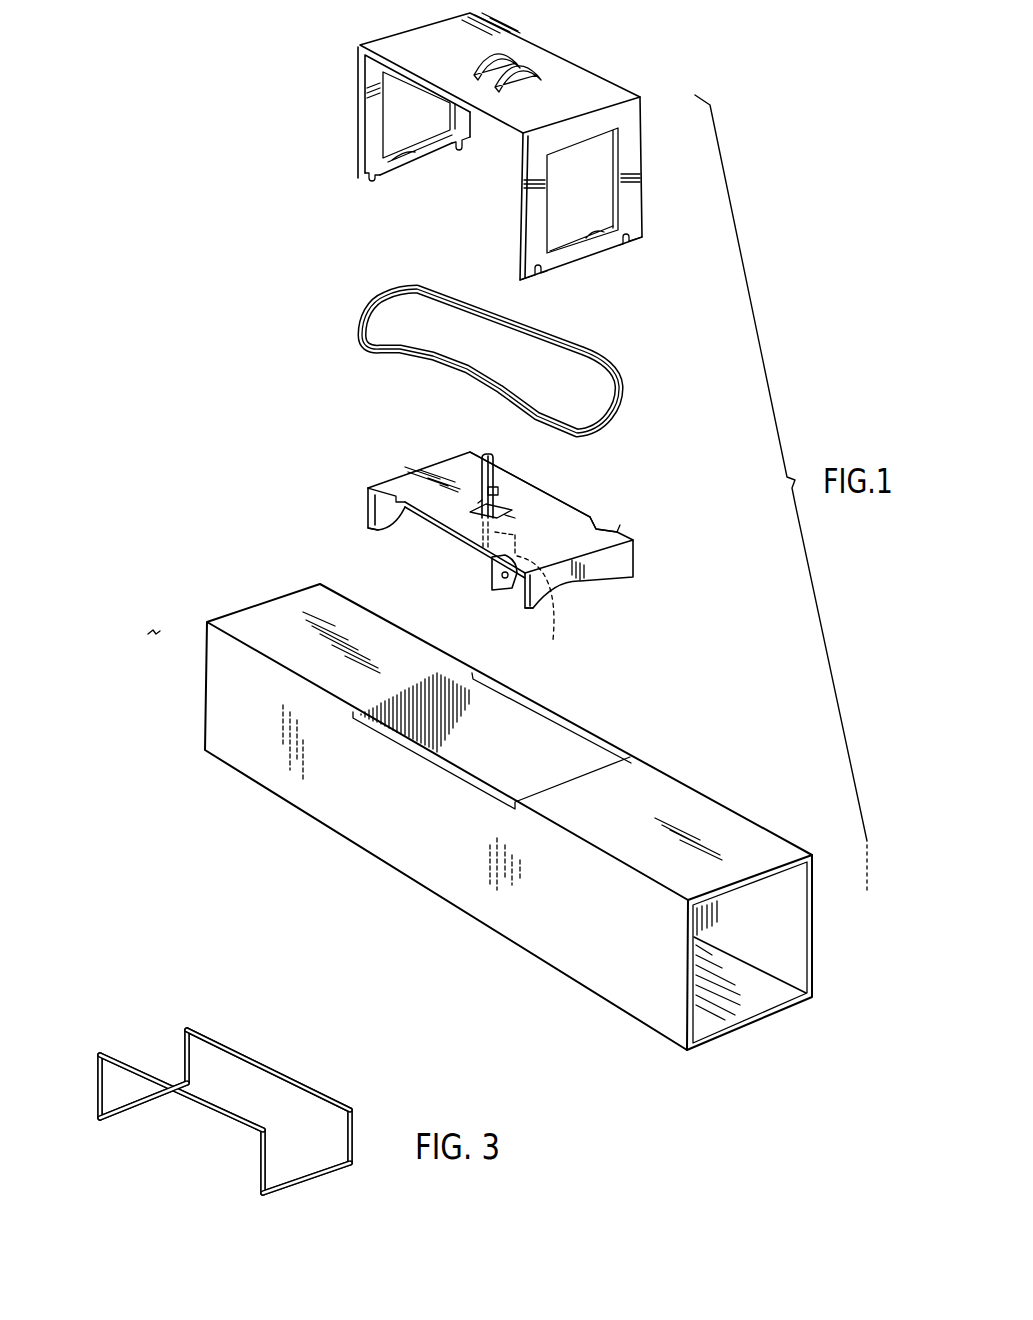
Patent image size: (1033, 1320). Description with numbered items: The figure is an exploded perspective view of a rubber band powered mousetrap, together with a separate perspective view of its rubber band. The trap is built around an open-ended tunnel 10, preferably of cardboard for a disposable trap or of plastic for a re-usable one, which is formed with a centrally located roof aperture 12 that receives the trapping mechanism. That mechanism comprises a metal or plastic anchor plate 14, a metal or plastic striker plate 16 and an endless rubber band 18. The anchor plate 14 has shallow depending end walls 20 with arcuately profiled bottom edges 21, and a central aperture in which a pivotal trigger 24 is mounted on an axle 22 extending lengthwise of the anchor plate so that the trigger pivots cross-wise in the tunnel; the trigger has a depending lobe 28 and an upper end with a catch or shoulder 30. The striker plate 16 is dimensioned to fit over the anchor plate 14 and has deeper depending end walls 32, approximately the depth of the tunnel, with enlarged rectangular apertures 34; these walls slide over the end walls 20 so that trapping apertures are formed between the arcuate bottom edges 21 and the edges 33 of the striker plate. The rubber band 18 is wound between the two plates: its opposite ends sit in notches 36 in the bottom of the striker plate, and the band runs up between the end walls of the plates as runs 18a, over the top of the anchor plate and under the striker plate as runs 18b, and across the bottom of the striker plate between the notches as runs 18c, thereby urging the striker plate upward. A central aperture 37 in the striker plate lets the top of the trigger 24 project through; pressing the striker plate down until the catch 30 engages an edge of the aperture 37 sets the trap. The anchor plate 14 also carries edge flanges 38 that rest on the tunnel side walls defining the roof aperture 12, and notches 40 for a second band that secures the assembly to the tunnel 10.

In FIG. 1, the open-ended tunnel 10 is at (380, 843).
In FIG. 1, the roof aperture 12 is at (557, 757).
In FIG. 1, the anchor plate 14 is at (543, 507).
In FIG. 1, the striker plate 16 is at (572, 82).
In FIG. 1, the endless rubber band 18 is at (375, 320).
In FIG. 3, the endless rubber band 18 is at (245, 1044).
In FIG. 3, the runs of the band 18a is at (182, 1050).
In FIG. 3, the runs of the band 18b is at (297, 1070).
In FIG. 3, the runs of the band 18c is at (147, 1103).
In FIG. 1, the depending end walls 20 is at (382, 517).
In FIG. 1, the arcuately profiled bottom edges 21 is at (397, 517).
In FIG. 1, the axle 22 is at (473, 500).
In FIG. 1, the pivotal trigger 24 is at (492, 566).
In FIG. 1, the depending lobe 28 is at (500, 580).
In FIG. 1, the catch 30 is at (500, 482).
In FIG. 1, the depending end walls 32 is at (365, 83).
In FIG. 1, the edges 33 is at (415, 150).
In FIG. 1, the enlarged rectangular apertures 34 is at (392, 107).
In FIG. 1, the notches 36 is at (360, 184).
In FIG. 1, the central aperture 37 is at (493, 70).
In FIG. 1, the edge flanges 38 is at (582, 510).
In FIG. 1, the notches 40 is at (498, 463).